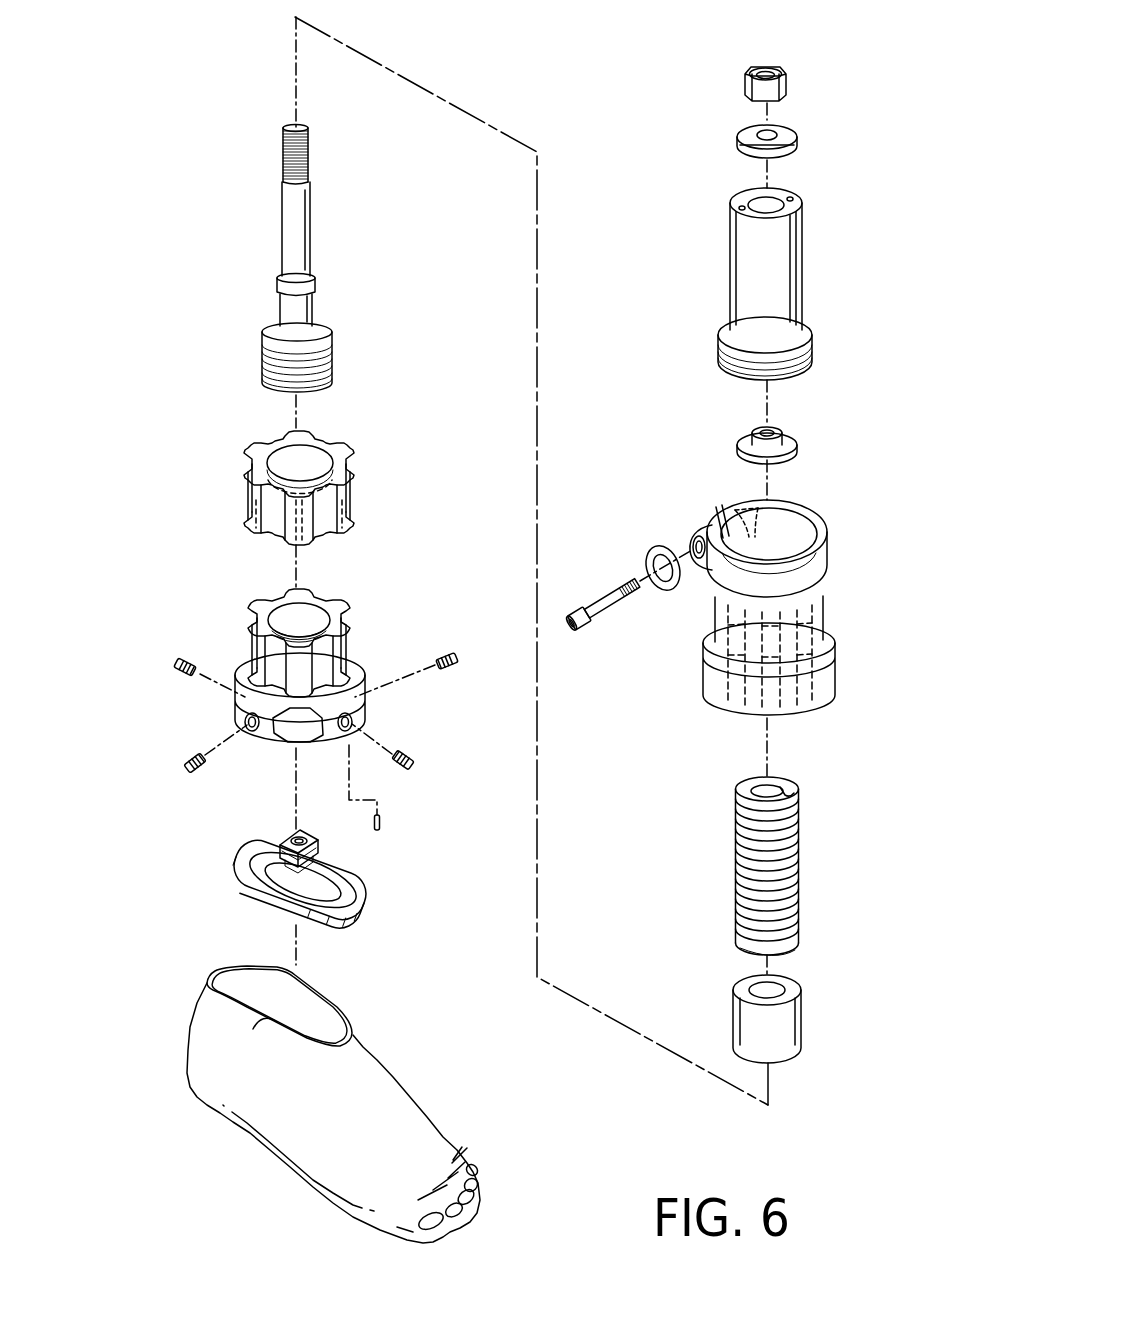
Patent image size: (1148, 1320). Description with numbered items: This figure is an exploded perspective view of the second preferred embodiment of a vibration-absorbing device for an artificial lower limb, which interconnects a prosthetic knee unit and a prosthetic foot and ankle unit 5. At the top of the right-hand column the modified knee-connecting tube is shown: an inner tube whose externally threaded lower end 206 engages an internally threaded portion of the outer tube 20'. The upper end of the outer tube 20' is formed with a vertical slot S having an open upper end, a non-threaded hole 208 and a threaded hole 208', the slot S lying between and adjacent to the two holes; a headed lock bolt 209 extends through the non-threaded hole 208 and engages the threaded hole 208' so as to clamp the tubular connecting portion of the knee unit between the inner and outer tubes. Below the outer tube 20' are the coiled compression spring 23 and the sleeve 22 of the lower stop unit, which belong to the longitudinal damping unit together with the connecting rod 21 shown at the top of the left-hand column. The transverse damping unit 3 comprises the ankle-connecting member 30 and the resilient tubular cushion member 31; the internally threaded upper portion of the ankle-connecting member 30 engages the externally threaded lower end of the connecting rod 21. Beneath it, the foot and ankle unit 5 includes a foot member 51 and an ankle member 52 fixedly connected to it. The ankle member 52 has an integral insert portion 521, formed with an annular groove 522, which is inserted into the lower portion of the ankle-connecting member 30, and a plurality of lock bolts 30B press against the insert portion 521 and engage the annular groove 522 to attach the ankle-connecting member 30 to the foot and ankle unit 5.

The connecting rod 21 is at (283, 222).
The tubular cushion member 31 is at (262, 433).
The ankle-connecting member 30 is at (258, 602).
The transverse damping unit 3 is at (172, 622).
The lock bolts 30B is at (190, 776).
The ankle member 52 is at (232, 884).
The insert portion 521 is at (317, 829).
The annular groove 522 is at (350, 872).
The foot member 51 is at (227, 1046).
The prosthetic foot and ankle unit 5 is at (198, 1178).
The externally threaded lower end 206 is at (813, 355).
The threaded hole 208' is at (710, 476).
The vertical slot S is at (717, 514).
The non-threaded hole 208 is at (642, 539).
The outer tube 20' is at (742, 565).
The headed lock bolt 209 is at (614, 613).
The coiled compression spring 23 is at (799, 862).
The sleeve 22 is at (802, 1017).